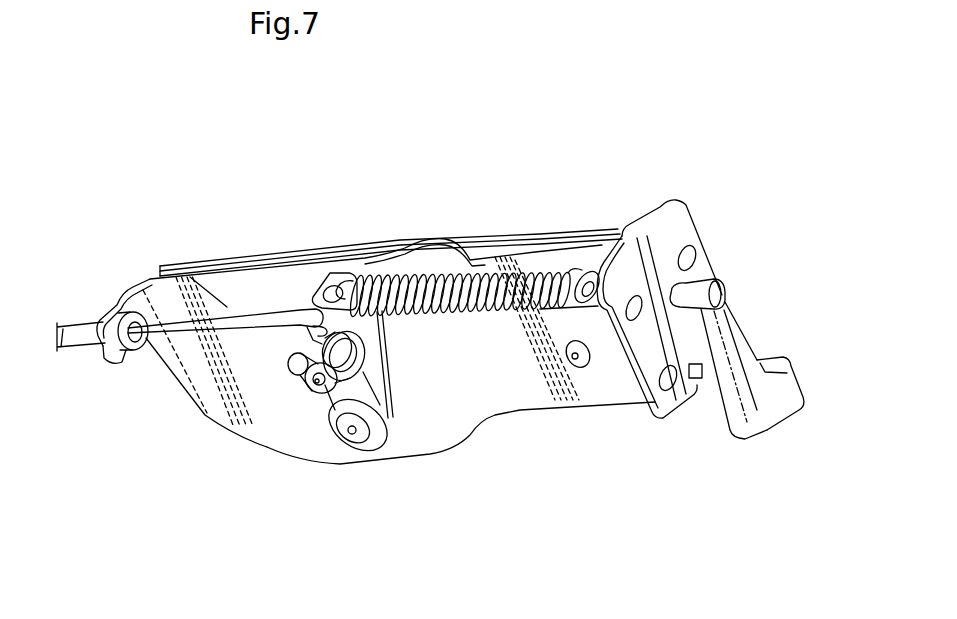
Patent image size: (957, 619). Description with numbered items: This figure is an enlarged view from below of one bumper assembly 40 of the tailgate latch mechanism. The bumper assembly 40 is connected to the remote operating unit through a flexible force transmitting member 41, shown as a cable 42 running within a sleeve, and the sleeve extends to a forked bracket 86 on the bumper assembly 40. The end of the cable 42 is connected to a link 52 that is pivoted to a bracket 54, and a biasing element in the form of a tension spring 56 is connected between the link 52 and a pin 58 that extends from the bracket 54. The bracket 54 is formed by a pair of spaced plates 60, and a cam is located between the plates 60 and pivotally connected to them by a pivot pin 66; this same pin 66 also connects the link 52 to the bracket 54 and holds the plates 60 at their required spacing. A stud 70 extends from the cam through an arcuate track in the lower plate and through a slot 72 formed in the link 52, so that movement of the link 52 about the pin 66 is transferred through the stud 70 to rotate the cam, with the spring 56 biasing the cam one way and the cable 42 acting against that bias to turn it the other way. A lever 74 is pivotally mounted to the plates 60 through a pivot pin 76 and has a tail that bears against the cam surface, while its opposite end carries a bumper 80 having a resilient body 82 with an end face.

The bumper assembly 40 is at (278, 417).
The flexible force transmitting member 41 is at (74, 356).
The cable 42 is at (203, 282).
The link 52 is at (375, 350).
The bracket 54 is at (463, 418).
The tension spring 56 is at (470, 267).
The pin 58 is at (571, 283).
The spaced plates 60 is at (268, 270).
The pivot pin 66 is at (357, 432).
The stud 70 is at (290, 362).
The slot 72 is at (373, 372).
The lever 74 is at (702, 380).
The pivot pin 76 is at (578, 368).
The bumper 80 is at (740, 327).
The resilient body 82 is at (787, 405).
The forked bracket 86 is at (117, 297).